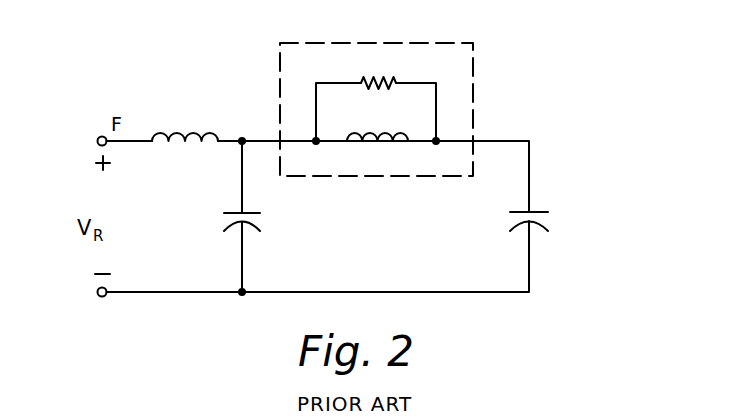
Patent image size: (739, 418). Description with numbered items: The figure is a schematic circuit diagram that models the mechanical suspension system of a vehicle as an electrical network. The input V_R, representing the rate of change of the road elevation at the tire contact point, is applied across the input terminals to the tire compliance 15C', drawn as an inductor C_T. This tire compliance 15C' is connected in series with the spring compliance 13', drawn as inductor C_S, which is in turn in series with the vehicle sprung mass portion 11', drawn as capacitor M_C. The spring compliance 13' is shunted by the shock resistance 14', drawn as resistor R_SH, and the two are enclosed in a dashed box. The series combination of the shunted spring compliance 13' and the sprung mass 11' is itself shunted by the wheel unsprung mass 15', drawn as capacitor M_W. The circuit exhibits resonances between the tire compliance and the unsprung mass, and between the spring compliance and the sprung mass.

The tire compliance 15C' is at (183, 141).
The shock resistance 14' is at (378, 95).
The spring compliance 13' is at (393, 170).
The wheel unsprung mass 15' is at (240, 240).
The vehicle sprung mass portion 11' is at (524, 239).